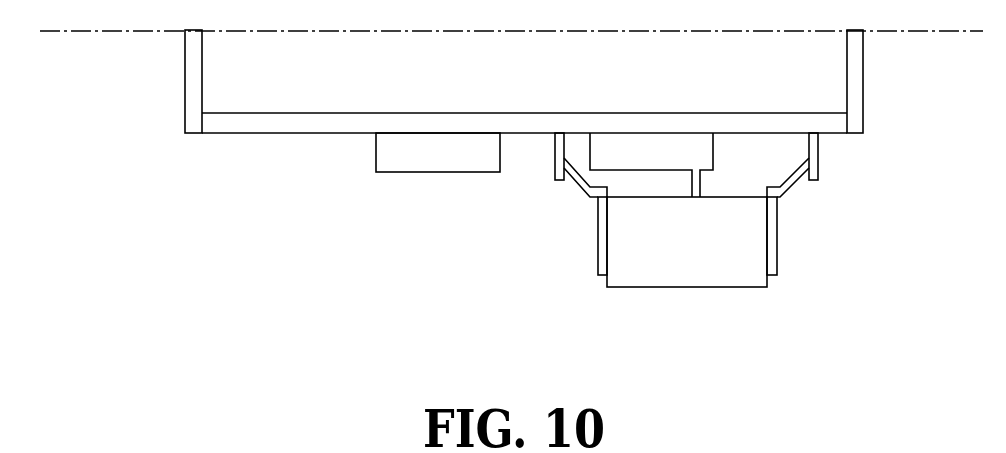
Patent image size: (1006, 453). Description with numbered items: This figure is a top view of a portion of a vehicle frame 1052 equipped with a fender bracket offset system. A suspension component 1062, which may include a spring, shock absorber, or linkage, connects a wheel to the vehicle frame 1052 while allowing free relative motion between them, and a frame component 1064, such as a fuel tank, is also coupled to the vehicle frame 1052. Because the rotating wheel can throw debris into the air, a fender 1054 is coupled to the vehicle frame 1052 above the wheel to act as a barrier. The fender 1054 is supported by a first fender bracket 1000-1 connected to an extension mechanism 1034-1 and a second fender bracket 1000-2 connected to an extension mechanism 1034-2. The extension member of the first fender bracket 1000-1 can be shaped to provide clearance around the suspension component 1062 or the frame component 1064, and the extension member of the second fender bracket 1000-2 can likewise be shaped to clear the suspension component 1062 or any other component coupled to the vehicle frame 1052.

The vehicle frame 1052 is at (185, 98).
The frame component 1064 is at (376, 152).
The suspension component 1062 is at (713, 145).
The first fender bracket 1000-1 is at (562, 200).
The second fender bracket 1000-2 is at (805, 203).
The extension mechanism 1034-1 is at (598, 253).
The extension mechanism 1034-2 is at (777, 253).
The fender 1054 is at (685, 287).